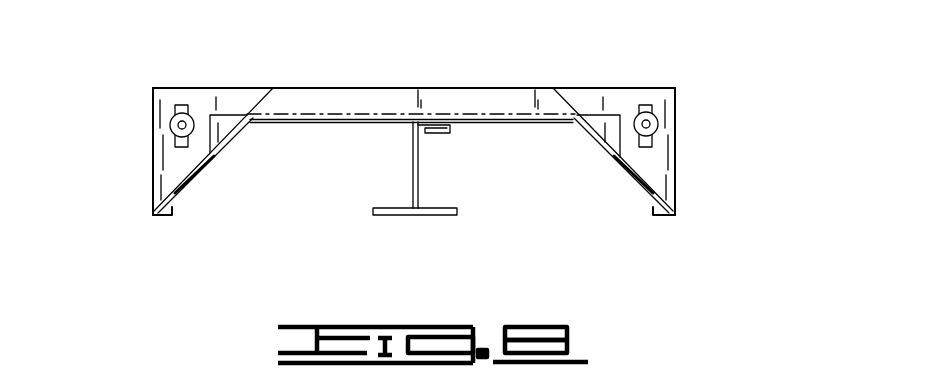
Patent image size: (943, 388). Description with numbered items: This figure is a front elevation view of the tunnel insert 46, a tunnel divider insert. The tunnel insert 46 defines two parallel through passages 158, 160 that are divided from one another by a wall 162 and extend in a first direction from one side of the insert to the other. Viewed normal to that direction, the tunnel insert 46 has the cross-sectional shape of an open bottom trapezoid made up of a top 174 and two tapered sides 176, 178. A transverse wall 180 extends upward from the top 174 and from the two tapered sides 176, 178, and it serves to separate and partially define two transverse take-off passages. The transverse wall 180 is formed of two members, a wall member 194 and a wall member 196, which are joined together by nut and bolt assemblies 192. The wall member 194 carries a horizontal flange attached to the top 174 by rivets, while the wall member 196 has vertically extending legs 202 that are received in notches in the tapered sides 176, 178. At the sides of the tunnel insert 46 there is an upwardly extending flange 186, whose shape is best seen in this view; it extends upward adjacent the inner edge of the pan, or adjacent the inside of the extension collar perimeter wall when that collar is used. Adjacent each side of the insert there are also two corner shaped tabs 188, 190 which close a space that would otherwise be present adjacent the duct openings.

The tunnel insert 46 is at (686, 57).
The through passage 158 is at (338, 165).
The through passage 160 is at (533, 168).
The wall 162 is at (418, 163).
The top 174 is at (293, 124).
The tapered side 176 is at (218, 156).
The tapered side 178 is at (620, 156).
The transverse wall 180 is at (469, 146).
The wall member 194 is at (670, 102).
The upwardly extending flange 186 is at (515, 100).
The corner shaped tab 188 is at (222, 123).
The corner shaped tab 190 is at (592, 110).
The nut and bolt assembly 192 is at (182, 124).
The wall member 196 is at (423, 227).
The vertically extending leg 202 is at (170, 211).